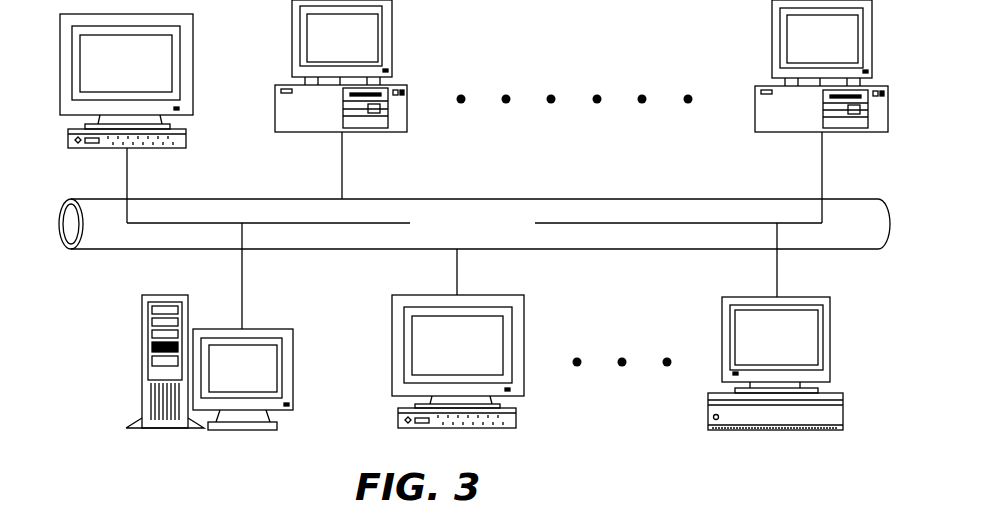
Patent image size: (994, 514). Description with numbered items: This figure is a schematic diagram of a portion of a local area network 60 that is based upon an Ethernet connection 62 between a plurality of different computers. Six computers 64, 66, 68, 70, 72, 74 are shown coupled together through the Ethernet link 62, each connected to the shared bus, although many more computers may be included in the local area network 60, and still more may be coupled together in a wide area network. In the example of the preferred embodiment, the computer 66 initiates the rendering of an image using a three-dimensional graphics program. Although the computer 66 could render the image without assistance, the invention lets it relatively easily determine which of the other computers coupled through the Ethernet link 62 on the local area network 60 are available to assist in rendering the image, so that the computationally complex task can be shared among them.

The local area network 60 is at (92, 443).
The Ethernet connection 62 is at (522, 198).
The computer 64 is at (186, 131).
The computer 66 is at (407, 110).
The computer 68 is at (755, 130).
The computer 70 is at (142, 373).
The computer 72 is at (516, 422).
The computer 74 is at (708, 418).